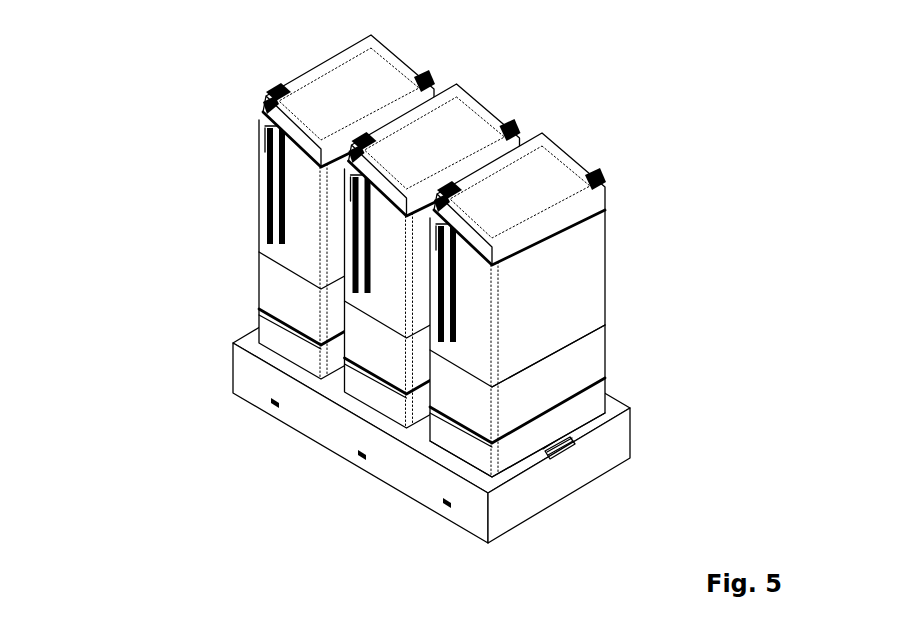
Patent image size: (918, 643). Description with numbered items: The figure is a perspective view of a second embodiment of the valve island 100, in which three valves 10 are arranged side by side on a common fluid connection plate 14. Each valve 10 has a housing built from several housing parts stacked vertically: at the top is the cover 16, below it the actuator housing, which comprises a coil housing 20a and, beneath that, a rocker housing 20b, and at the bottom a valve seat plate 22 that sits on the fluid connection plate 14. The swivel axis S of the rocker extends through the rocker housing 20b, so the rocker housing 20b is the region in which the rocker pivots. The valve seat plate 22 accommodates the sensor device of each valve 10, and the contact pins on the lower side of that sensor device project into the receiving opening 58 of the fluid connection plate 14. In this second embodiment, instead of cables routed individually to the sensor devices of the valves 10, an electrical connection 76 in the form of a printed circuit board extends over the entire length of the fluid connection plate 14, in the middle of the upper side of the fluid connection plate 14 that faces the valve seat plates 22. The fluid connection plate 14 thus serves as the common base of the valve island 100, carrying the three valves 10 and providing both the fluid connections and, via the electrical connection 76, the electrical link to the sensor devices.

The valve island 100 is at (432, 295).
The valve 10 is at (526, 295).
The fluid connection plate 14 is at (490, 424).
The cover 16 is at (606, 190).
The coil housing 20a is at (598, 265).
The rocker housing 20b is at (455, 400).
The valve seat plate 22 is at (473, 453).
The swivel axis S is at (552, 392).
The receiving opening 58 is at (546, 448).
The electrical connection 76 is at (568, 452).